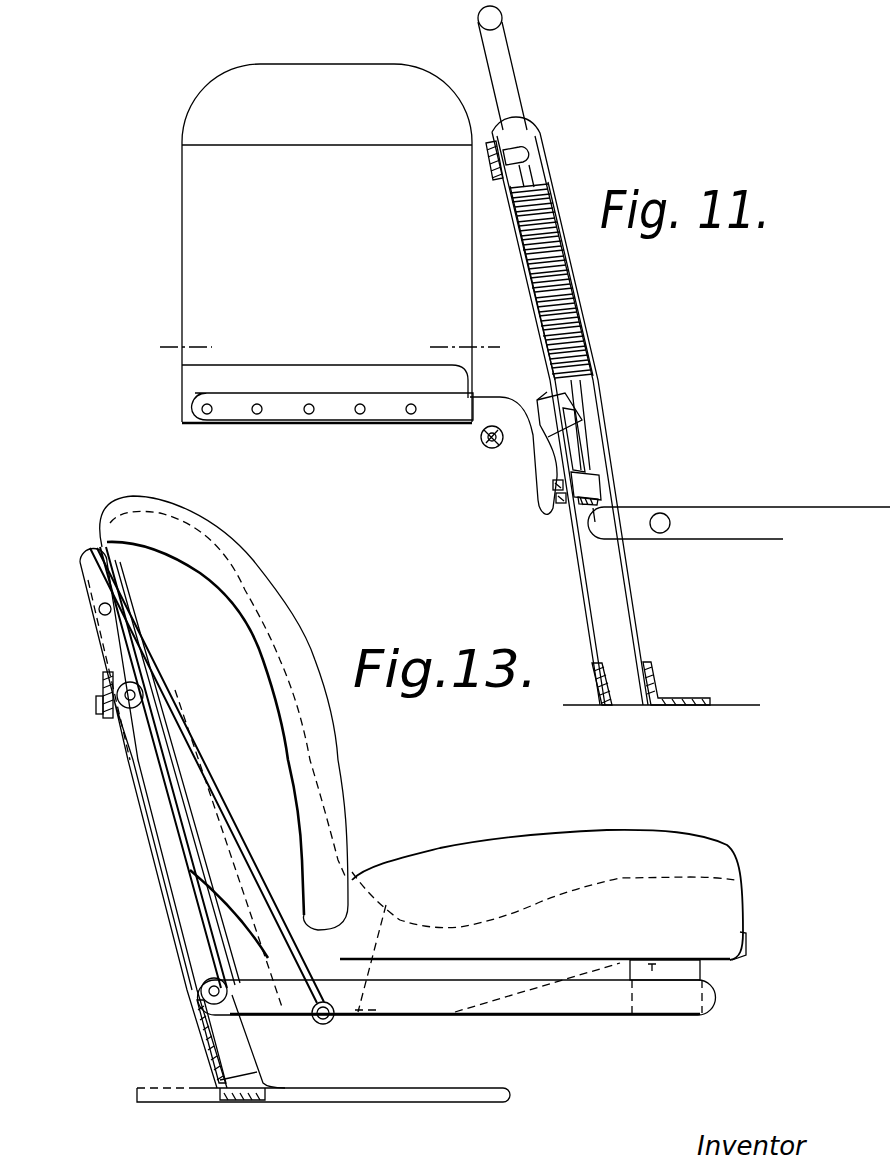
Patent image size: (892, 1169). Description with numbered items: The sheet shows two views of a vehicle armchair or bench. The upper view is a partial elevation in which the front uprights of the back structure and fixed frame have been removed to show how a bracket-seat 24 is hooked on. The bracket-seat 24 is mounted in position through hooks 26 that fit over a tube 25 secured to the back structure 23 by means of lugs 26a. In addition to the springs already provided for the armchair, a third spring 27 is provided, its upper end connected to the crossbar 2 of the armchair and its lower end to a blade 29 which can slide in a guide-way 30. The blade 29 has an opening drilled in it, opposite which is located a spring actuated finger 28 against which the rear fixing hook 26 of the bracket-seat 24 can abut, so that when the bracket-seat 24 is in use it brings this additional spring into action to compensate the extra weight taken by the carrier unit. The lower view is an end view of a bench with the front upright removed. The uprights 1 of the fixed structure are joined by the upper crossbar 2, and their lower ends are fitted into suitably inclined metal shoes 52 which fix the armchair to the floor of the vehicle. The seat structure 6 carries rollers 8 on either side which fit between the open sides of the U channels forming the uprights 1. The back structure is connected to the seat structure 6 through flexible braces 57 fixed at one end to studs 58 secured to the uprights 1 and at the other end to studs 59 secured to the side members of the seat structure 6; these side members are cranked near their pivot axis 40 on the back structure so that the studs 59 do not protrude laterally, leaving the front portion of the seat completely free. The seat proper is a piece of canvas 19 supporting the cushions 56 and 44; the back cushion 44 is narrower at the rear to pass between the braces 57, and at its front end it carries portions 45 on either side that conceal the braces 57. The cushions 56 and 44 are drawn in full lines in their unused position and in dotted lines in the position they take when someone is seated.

In FIG. 13, the uprights 1 is at (147, 780).
In FIG. 11, the crossbar 2 is at (503, 138).
In FIG. 13, the crossbar 2 is at (103, 683).
In FIG. 13, the seat structure 6 is at (660, 1000).
In FIG. 13, the rollers 8 is at (124, 703).
In FIG. 13, the canvas 19 is at (190, 815).
In FIG. 11, the back structure 23 is at (522, 255).
In FIG. 11, the bracket-seat 24 is at (330, 243).
In FIG. 11, the tube 25 is at (488, 446).
In FIG. 11, the hooks 26 is at (492, 408).
In FIG. 11, the lugs 26a is at (580, 375).
In FIG. 11, the third spring 27 is at (567, 253).
In FIG. 11, the spring actuated finger 28 is at (565, 495).
In FIG. 11, the blade 29 is at (613, 497).
In FIG. 11, the guide-way 30 is at (577, 423).
In FIG. 13, the pivot axis 40 is at (203, 989).
In FIG. 13, the back cushion 44 is at (216, 622).
In FIG. 13, the concealing portions 45 is at (288, 642).
In FIG. 13, the metal shoes 52 is at (210, 1055).
In FIG. 13, the seat cushion 56 is at (683, 845).
In FIG. 13, the flexible braces 57 is at (192, 763).
In FIG. 13, the studs 58 is at (99, 611).
In FIG. 13, the studs 59 is at (322, 1025).